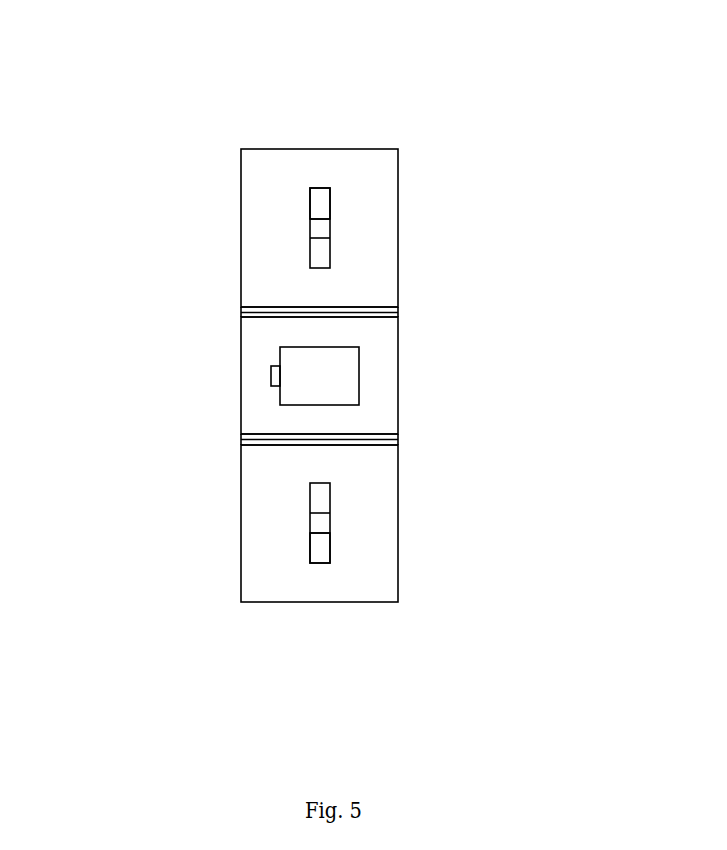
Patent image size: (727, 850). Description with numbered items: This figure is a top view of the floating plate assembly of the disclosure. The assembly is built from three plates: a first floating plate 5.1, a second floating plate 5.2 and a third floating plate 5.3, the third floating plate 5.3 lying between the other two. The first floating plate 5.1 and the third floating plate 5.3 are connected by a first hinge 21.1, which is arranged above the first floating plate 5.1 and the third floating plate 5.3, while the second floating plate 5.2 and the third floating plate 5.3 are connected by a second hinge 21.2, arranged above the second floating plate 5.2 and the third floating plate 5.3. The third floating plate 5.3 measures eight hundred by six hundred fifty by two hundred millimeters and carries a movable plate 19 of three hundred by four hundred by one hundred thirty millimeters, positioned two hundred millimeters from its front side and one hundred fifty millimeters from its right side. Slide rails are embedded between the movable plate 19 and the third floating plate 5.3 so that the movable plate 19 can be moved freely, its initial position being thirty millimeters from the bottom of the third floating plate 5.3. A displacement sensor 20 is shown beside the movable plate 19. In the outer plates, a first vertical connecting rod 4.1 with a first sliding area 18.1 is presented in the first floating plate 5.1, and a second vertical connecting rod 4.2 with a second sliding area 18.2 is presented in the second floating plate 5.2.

The first floating plate 5.1 is at (241, 602).
The second floating plate 5.2 is at (241, 150).
The third floating plate 5.3 is at (399, 397).
The first vertical connecting rod 4.1 is at (320, 522).
The second vertical connecting rod 4.2 is at (320, 228).
The first sliding area 18.1 is at (318, 548).
The second sliding area 18.2 is at (318, 201).
The movable plate 19 is at (320, 377).
The displacement sensor 20 is at (271, 375).
The first hinge 21.1 is at (399, 440).
The second hinge 21.2 is at (399, 310).